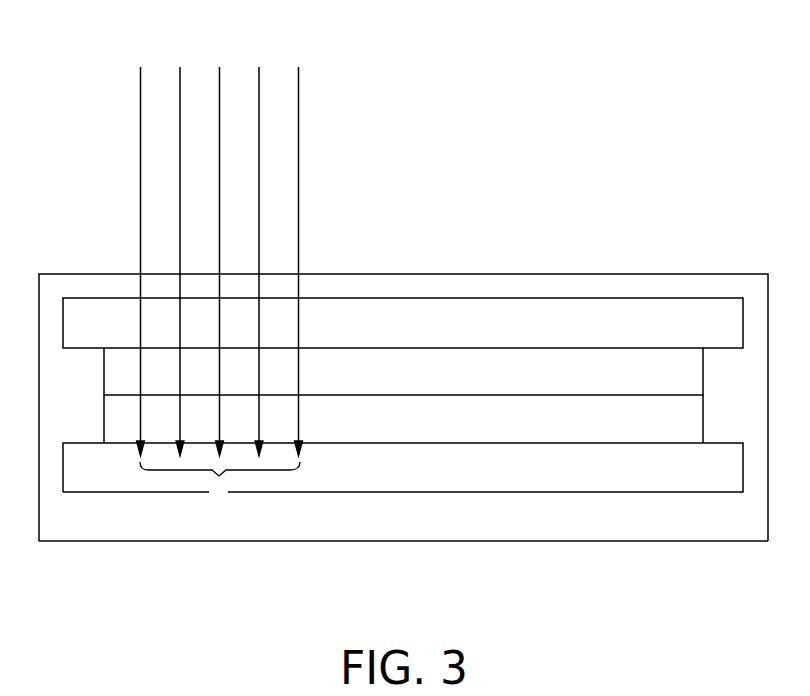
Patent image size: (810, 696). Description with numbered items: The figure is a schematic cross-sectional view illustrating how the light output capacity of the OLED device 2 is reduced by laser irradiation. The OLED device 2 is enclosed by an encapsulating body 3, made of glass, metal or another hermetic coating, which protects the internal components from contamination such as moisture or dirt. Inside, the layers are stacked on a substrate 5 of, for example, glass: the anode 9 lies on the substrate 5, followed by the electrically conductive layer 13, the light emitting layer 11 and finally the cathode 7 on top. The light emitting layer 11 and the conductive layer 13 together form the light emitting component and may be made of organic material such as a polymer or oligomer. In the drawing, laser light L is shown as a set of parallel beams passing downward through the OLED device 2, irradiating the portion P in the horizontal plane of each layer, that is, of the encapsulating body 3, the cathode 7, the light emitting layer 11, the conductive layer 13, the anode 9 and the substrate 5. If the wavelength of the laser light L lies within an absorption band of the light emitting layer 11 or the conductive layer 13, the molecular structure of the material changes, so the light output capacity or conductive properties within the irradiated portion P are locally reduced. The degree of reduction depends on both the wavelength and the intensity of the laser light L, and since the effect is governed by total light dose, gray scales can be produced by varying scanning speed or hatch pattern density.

The OLED device 2 is at (488, 162).
The encapsulating body 3 is at (578, 274).
The substrate 5 is at (458, 541).
The cathode 7 is at (638, 298).
The anode 9 is at (558, 467).
The light emitting layer 11 is at (403, 380).
The conductive layer 13 is at (485, 415).
The laser light L is at (298, 128).
The irradiated portion P is at (220, 483).